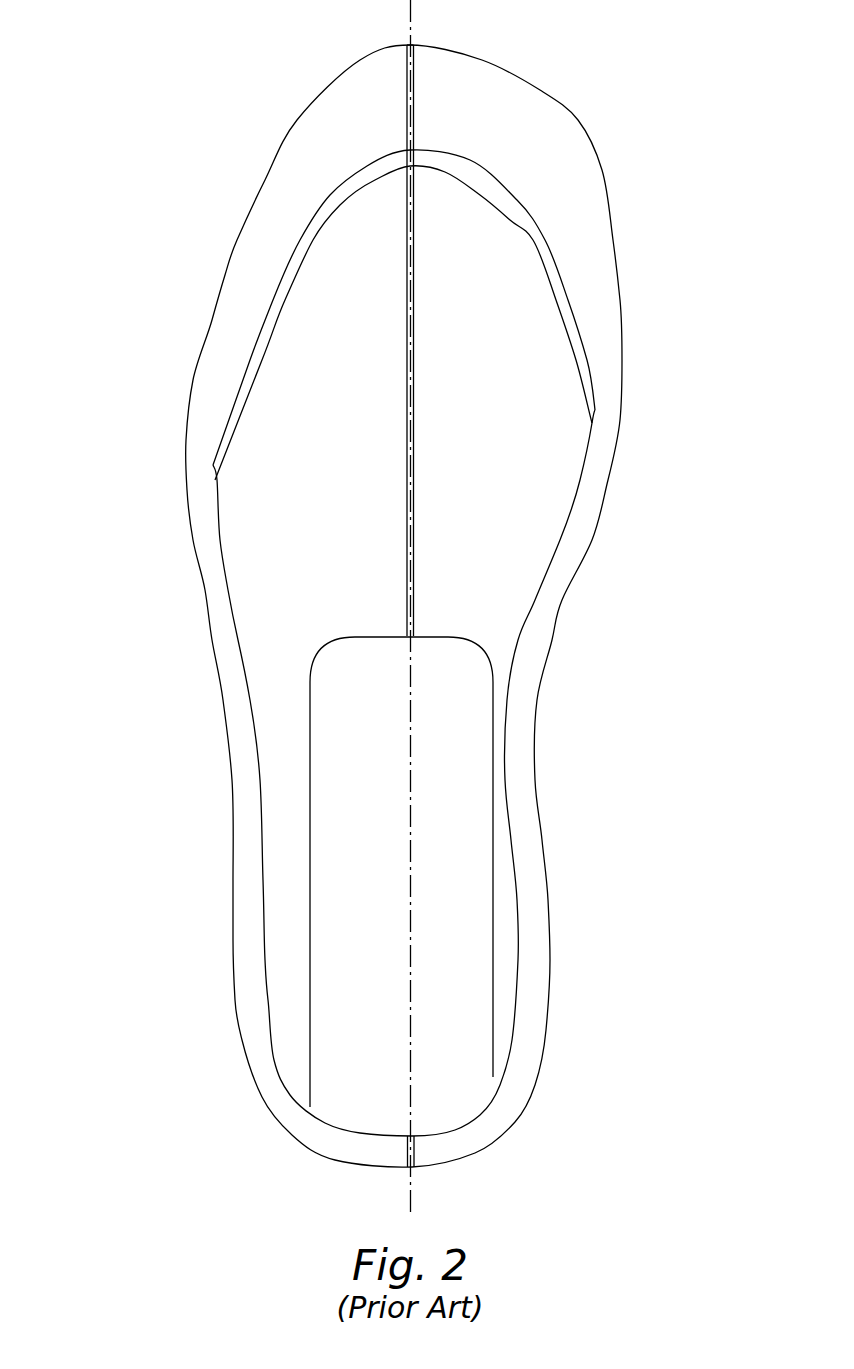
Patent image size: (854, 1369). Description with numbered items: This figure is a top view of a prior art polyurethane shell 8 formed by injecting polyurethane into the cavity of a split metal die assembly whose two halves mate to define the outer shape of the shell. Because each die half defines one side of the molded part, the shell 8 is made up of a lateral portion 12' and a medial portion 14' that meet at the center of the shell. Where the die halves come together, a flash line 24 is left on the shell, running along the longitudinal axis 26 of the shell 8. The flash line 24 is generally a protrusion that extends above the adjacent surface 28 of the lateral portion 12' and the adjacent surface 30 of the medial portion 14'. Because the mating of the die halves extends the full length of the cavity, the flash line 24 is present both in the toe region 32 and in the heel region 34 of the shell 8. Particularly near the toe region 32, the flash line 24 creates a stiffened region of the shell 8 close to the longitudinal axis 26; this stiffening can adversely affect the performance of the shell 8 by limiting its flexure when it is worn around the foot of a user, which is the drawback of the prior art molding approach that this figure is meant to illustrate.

The polyurethane shell 8 is at (113, 102).
The lateral portion 12' is at (255, 800).
The medial portion 14' is at (535, 773).
The flash line 24 is at (404, 100).
The longitudinal axis 26 is at (412, 1197).
The adjacent surface 28 is at (335, 125).
The adjacent surface 30 is at (557, 135).
The toe region 32 is at (418, 97).
The heel region 34 is at (428, 1152).